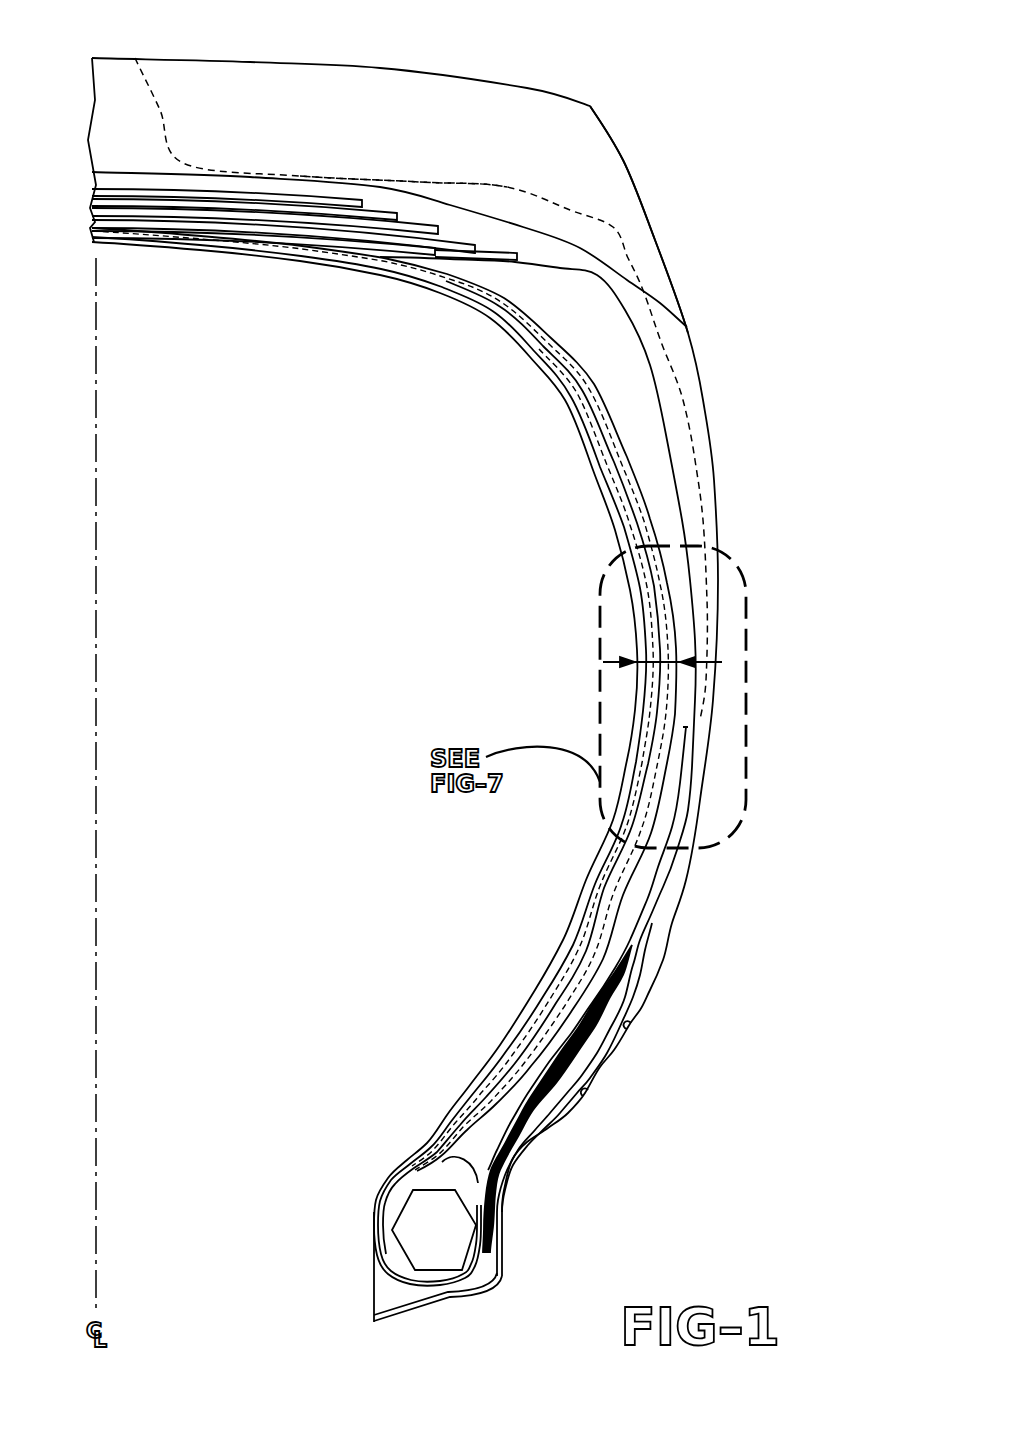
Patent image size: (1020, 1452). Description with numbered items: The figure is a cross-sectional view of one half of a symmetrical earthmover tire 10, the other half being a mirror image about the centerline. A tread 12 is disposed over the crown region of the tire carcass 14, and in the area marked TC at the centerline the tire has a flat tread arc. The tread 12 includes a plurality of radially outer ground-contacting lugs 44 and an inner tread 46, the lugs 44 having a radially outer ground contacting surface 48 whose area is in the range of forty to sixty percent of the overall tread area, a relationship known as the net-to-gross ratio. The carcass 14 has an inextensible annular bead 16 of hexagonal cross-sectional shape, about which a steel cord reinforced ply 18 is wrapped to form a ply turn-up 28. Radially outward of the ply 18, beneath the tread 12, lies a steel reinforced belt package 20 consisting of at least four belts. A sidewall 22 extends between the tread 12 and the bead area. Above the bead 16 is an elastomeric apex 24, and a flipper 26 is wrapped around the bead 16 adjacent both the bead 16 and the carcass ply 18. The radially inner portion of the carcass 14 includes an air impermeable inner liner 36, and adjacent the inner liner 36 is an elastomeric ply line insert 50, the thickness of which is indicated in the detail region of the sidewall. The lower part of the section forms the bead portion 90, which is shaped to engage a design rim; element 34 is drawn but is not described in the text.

The earthmover tire 10 is at (728, 271).
The tread 12 is at (460, 107).
The tire carcass 14 is at (481, 1080).
The bead 16 is at (433, 1236).
The ply 18 is at (430, 1127).
The belt package 20 is at (270, 212).
The sidewall 22 is at (683, 470).
The apex 24 is at (490, 1193).
The flipper 26 is at (478, 1250).
The ply turn-up 28 is at (573, 1050).
The flipper 34 is at (510, 1148).
The inner liner 36 is at (600, 875).
The ground-contacting lugs 44 is at (323, 90).
The inner tread 46 is at (387, 180).
The ground contacting surface 48 is at (525, 90).
The ply line insert 50 is at (650, 657).
The bead portion 90 is at (370, 1152).
The flat tread arc area TC is at (177, 83).